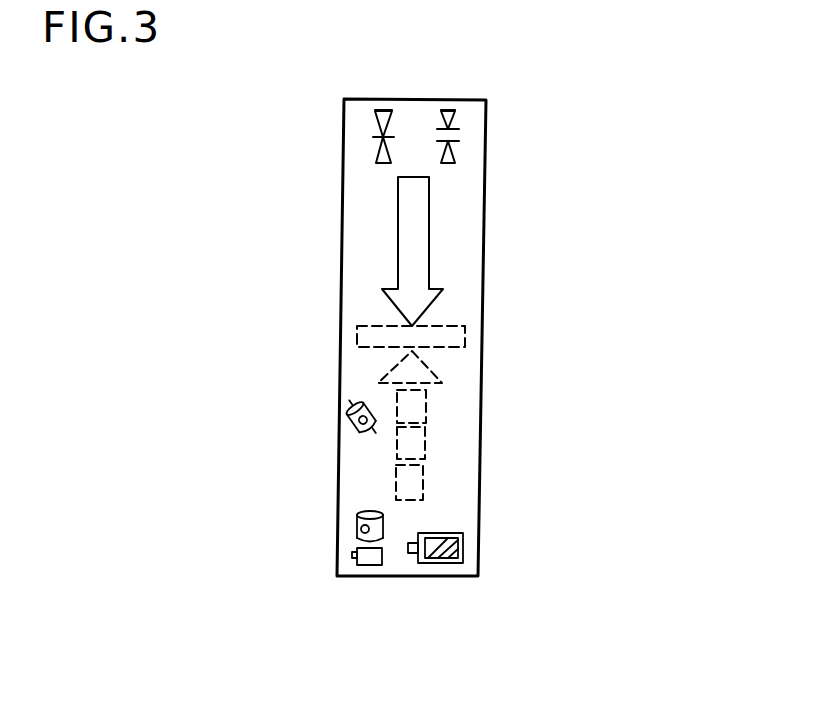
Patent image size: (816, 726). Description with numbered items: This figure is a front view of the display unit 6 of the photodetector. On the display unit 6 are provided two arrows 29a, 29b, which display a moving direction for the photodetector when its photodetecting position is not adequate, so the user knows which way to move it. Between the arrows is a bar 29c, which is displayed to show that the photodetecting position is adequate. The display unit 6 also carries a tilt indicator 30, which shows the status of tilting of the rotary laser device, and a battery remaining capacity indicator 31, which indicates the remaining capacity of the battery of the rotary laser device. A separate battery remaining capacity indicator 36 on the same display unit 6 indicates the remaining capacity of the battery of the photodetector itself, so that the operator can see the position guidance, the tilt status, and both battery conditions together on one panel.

The display unit 6 is at (488, 128).
The arrow 29a is at (430, 242).
The arrow 29b is at (427, 453).
The bar 29c is at (467, 330).
The tilt indicator 30 is at (358, 442).
The battery remaining capacity indicator 31 is at (350, 518).
The battery remaining capacity indicator 36 is at (465, 556).